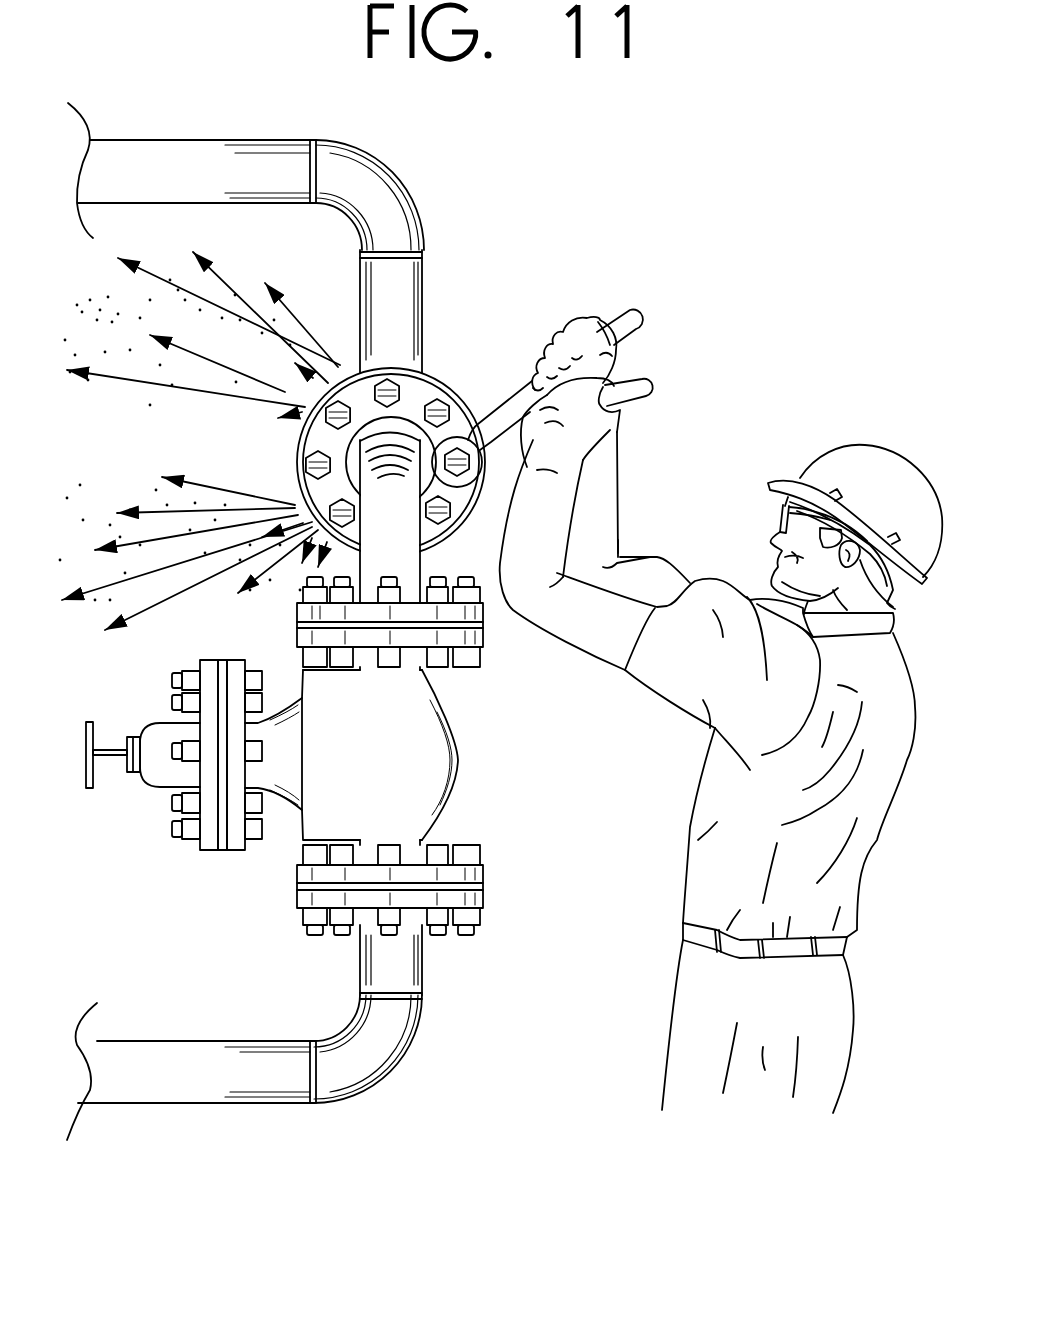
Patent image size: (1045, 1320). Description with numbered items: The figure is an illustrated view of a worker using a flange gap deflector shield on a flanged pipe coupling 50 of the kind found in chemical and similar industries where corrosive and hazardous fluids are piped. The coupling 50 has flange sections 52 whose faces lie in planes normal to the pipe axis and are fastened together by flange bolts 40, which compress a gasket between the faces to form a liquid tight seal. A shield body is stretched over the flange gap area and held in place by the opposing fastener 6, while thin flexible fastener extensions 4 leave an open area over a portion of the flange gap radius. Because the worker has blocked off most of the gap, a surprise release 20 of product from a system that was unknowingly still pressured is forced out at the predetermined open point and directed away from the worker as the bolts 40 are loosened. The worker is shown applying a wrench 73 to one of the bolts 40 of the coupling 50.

The fastener extensions 4 is at (297, 474).
The fastener 6 is at (297, 470).
The surprise release 20 is at (176, 366).
The flange bolts 40 is at (467, 463).
The flanged pipe coupling 50 is at (287, 441).
The flange sections 52 is at (317, 438).
The wrench 73 is at (430, 377).